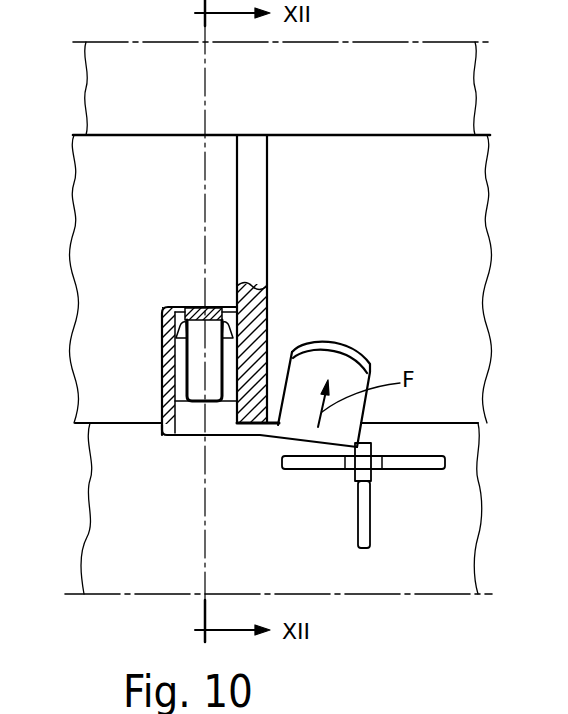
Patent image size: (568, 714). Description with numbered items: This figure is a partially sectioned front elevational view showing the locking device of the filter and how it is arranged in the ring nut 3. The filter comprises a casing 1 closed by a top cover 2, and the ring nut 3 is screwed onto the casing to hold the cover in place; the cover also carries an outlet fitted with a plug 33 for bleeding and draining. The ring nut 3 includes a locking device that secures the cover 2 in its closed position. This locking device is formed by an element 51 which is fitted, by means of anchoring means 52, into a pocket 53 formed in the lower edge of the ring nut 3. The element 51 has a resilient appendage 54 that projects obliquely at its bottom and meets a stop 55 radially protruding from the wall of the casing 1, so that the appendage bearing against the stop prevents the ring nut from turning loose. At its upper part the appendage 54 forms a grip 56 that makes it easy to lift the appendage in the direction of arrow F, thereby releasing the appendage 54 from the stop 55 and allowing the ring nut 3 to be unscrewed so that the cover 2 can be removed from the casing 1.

The casing 1 is at (437, 531).
The top cover 2 is at (440, 95).
The ring nut 3 is at (450, 198).
The plug 33 is at (488, 713).
The element 51 is at (198, 422).
The anchoring means 52 is at (163, 328).
The pocket 53 is at (165, 397).
The resilient appendage 54 is at (297, 430).
The stop 55 is at (370, 443).
The grip 56 is at (333, 352).